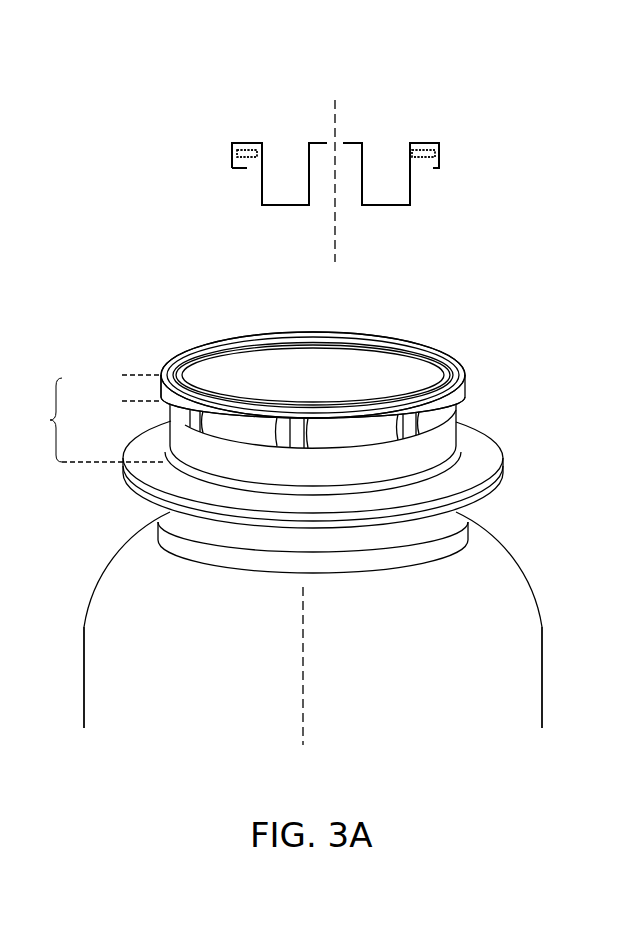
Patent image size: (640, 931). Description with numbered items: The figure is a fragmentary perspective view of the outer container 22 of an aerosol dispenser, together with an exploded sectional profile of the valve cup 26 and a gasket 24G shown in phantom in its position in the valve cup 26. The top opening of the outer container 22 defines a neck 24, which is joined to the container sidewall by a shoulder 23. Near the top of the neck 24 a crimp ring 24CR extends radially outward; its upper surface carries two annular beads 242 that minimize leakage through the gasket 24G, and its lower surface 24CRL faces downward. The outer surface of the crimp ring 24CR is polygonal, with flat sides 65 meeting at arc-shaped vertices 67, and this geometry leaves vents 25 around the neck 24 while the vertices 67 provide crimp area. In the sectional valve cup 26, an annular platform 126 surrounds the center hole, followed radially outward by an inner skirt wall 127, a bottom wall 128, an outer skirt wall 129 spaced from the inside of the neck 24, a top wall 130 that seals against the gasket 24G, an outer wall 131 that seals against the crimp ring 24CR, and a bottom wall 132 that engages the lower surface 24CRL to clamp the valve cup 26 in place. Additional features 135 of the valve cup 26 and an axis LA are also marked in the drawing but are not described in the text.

The outer container 22 is at (508, 710).
The shoulder 23 is at (507, 604).
The neck 24 is at (95, 418).
The crimp ring 24CR is at (160, 401).
The lower surface of the crimp ring 24CRL is at (173, 417).
The gasket 24G is at (248, 143).
The vent 25 is at (167, 373).
The valve cup 26 is at (543, 170).
The sides 65 is at (242, 423).
The vertices 67 is at (302, 442).
The annular platform 126 is at (352, 143).
The inner skirt wall 127 is at (362, 178).
The bottom wall 128 is at (380, 206).
The outer skirt wall 129 is at (408, 161).
The top wall 130 is at (417, 143).
The outer wall 131 is at (440, 148).
The bottom wall 132 is at (439, 172).
The retention feature 135 is at (440, 155).
The annular beads 242 is at (443, 360).
The longitudinal axis LA is at (321, 442).